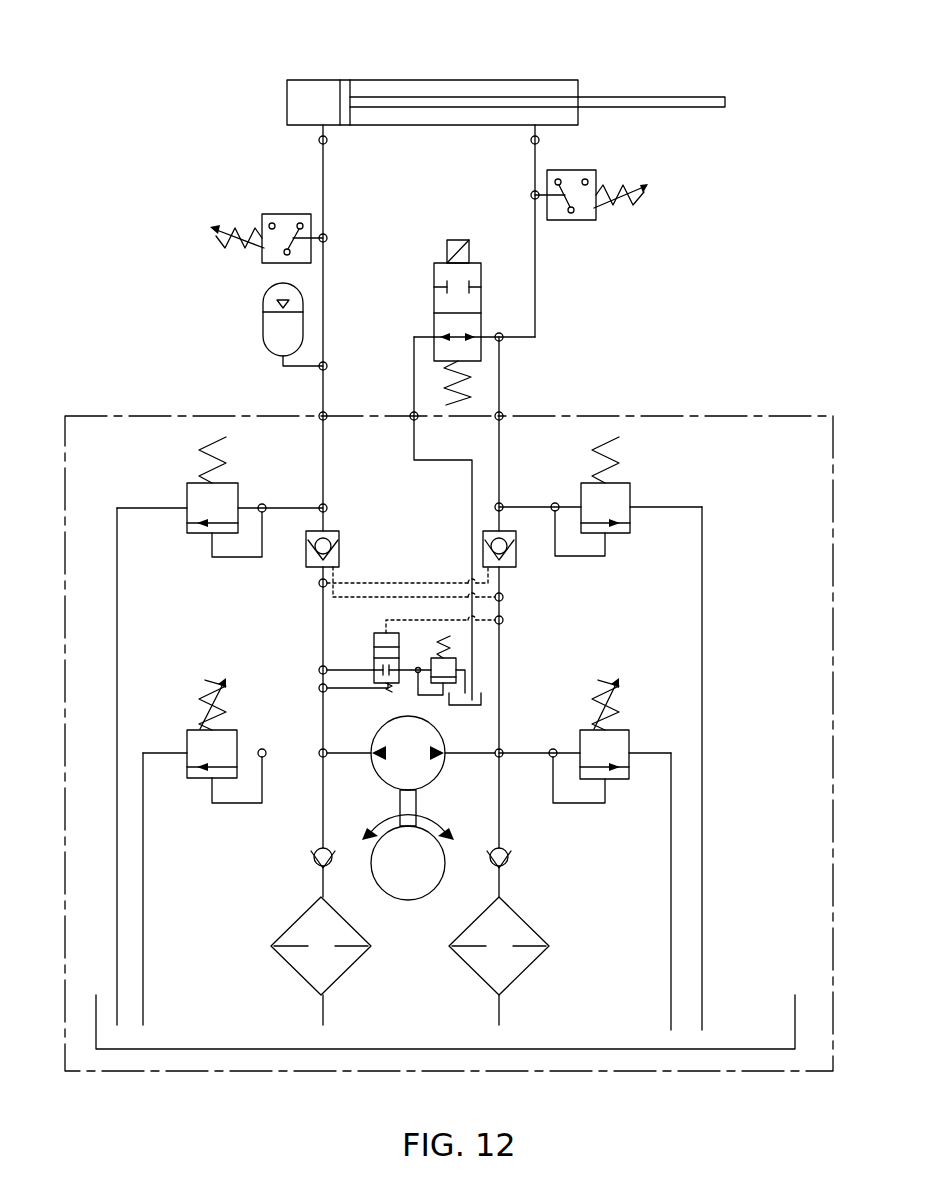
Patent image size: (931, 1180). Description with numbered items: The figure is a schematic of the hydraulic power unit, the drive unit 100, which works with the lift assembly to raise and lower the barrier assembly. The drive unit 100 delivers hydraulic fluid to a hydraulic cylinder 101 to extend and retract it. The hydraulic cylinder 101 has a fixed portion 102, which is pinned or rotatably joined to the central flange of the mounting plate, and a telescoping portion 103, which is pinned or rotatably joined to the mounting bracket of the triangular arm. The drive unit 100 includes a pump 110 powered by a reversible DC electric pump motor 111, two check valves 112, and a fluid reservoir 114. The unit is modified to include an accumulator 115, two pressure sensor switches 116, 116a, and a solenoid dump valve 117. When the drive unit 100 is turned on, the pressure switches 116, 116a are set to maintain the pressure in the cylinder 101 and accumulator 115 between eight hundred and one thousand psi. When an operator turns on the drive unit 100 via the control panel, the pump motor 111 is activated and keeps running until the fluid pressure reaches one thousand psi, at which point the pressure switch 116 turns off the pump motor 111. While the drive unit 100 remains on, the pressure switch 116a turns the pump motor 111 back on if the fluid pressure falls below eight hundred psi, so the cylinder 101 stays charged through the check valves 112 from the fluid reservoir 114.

The drive unit 100 is at (123, 255).
The hydraulic cylinder 101 is at (330, 68).
The fixed portion 102 is at (287, 100).
The telescoping portion 103 is at (668, 100).
The pump 110 is at (391, 773).
The pump motor 111 is at (391, 875).
The check valves 112 is at (310, 566).
The fluid reservoir 114 is at (467, 712).
The accumulator 115 is at (283, 340).
The pressure sensor switch 116 is at (585, 170).
The pressure sensor switch 116a is at (287, 214).
The solenoid dump valve 117 is at (434, 300).